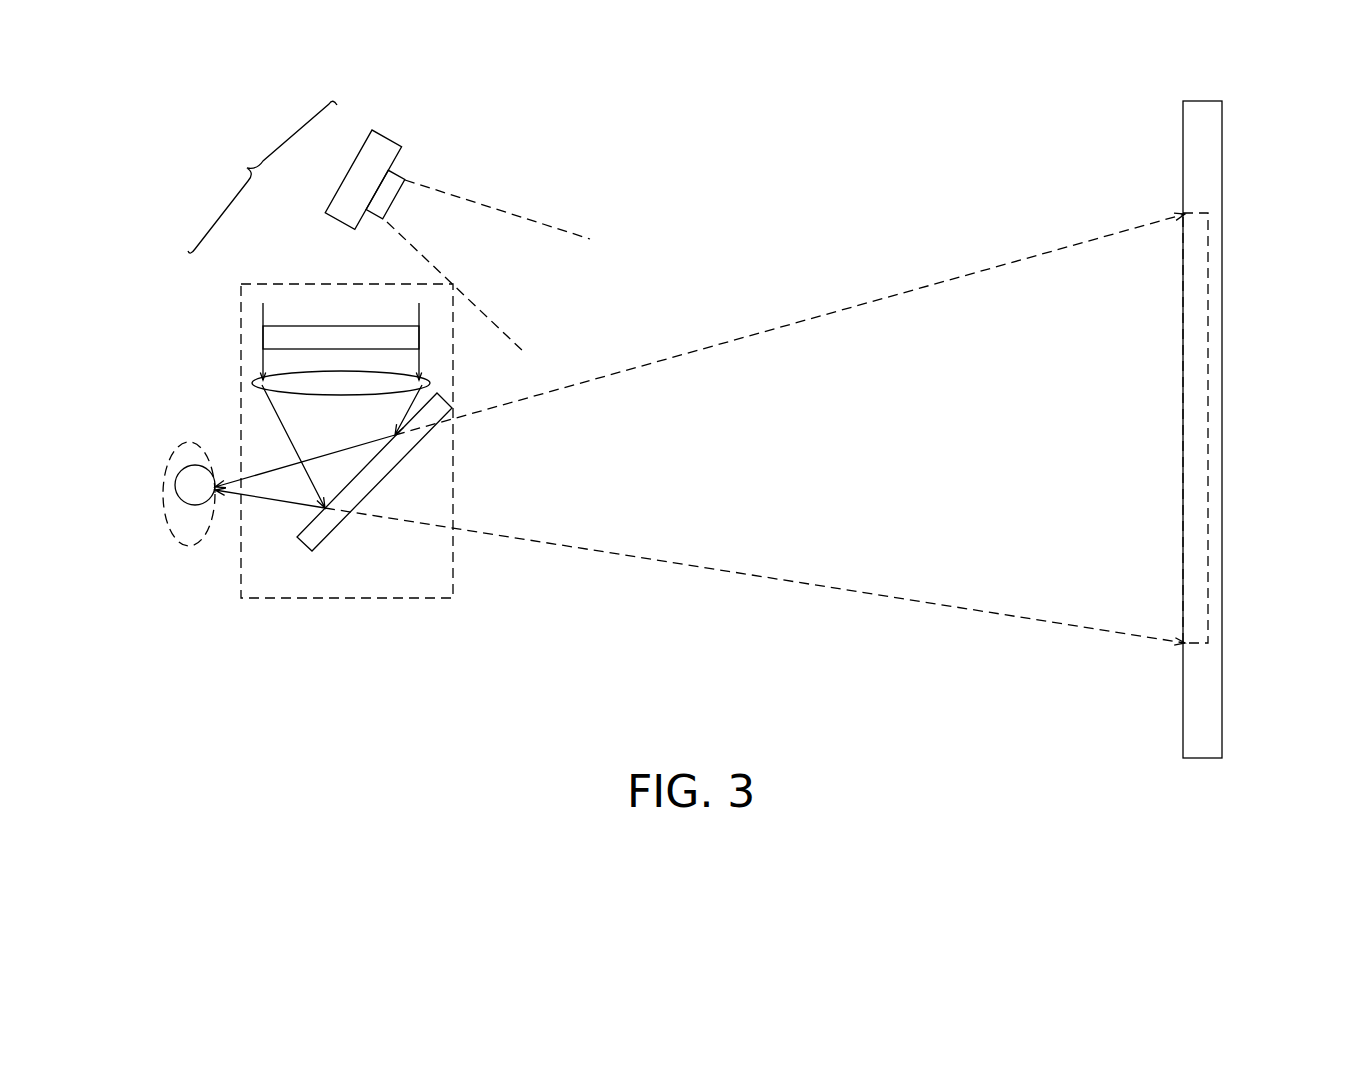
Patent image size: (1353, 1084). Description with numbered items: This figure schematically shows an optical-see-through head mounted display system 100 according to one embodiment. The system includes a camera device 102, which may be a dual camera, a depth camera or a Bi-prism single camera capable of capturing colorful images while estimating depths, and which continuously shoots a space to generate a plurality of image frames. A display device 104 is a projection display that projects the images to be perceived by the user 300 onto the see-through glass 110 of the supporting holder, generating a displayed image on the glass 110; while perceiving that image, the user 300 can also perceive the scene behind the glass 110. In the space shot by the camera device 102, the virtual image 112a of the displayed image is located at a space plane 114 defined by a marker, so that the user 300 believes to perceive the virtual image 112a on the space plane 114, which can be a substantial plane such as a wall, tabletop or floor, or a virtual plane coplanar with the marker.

The optical-see-through head mounted display system 100 is at (262, 177).
The camera device 102 is at (372, 150).
The display device 104 is at (376, 489).
The see-through glass 110 is at (382, 470).
The space plane 114 is at (1246, 426).
The virtual image 112a is at (1195, 320).
The user 300 is at (121, 485).